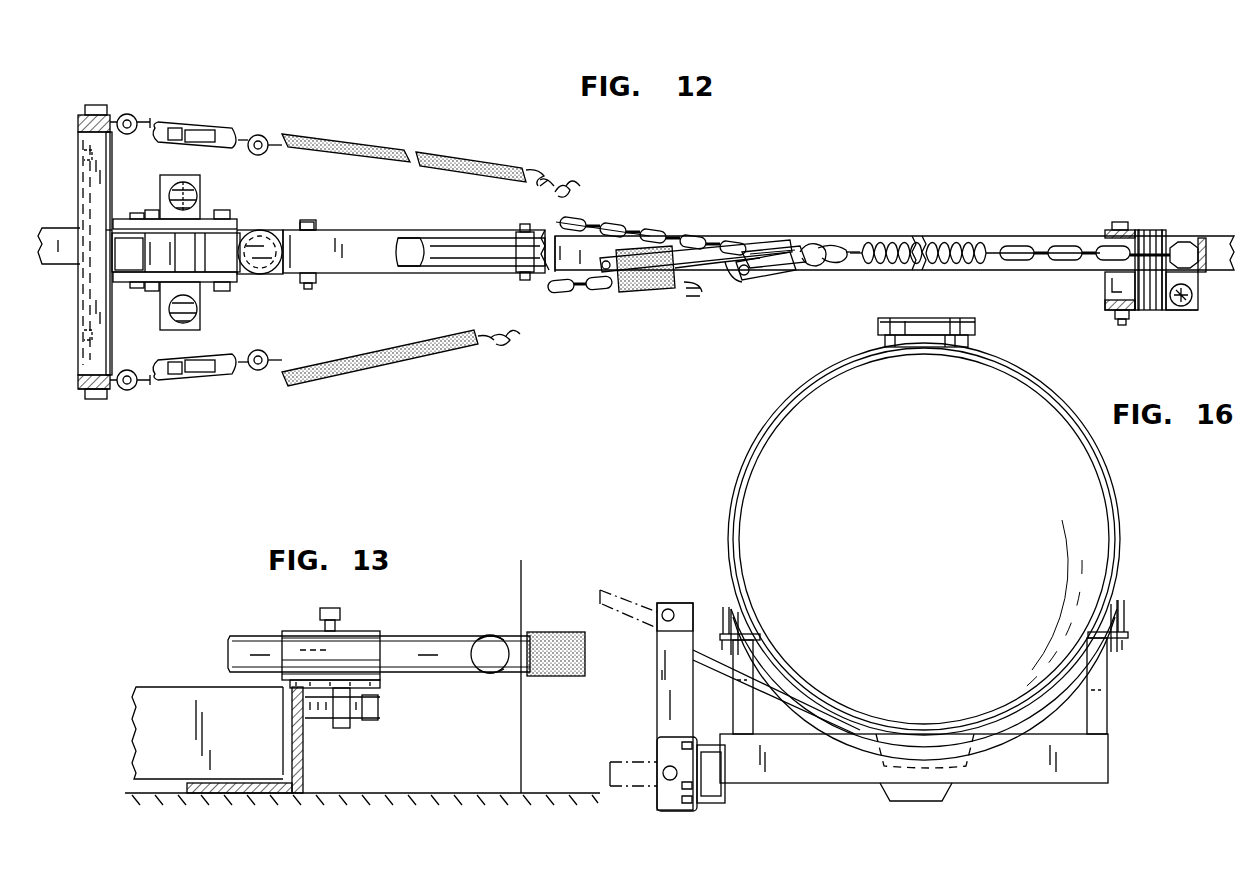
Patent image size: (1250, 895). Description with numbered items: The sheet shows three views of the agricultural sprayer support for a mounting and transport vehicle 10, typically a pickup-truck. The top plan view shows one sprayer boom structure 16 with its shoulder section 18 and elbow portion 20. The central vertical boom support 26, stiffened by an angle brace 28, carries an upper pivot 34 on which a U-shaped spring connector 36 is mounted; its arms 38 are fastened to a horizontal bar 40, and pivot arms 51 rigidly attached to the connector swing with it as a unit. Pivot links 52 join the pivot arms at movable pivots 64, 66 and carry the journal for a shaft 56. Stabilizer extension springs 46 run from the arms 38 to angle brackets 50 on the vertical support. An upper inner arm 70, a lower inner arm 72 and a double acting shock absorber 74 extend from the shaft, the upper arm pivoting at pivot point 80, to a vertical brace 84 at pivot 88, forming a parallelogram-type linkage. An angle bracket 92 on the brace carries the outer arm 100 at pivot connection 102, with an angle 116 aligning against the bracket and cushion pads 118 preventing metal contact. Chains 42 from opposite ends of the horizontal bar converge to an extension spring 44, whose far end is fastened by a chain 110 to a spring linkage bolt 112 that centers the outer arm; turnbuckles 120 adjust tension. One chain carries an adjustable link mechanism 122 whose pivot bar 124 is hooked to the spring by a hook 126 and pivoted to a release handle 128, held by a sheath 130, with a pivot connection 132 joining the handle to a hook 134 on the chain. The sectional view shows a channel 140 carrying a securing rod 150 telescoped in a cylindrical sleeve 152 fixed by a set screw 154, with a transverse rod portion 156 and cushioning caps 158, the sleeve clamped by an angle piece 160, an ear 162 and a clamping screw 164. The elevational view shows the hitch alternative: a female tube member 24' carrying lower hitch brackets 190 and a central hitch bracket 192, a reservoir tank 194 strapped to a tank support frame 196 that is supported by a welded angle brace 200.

In FIG. 13, the mounting and transport vehicle 10 is at (518, 572).
In FIG. 12, the sprayer boom structure 16 is at (936, 205).
In FIG. 12, the shoulder section 18 is at (76, 345).
In FIG. 12, the elbow portion 20 is at (1184, 320).
In FIG. 16, the female tube member 24' is at (714, 796).
In FIG. 12, the central vertical boom support 26 is at (180, 253).
In FIG. 12, the angle brace 28 is at (66, 255).
In FIG. 12, the upper pivot 34 is at (148, 218).
In FIG. 12, the U-shaped spring connector 36 is at (86, 324).
In FIG. 12, the arms 38 is at (120, 212).
In FIG. 12, the horizontal bar 40 is at (80, 187).
In FIG. 12, the chains 42 is at (530, 204).
In FIG. 12, the extension spring 44 is at (950, 240).
In FIG. 12, the stabilizer extension springs 46 is at (195, 190).
In FIG. 12, the angle brackets 50 is at (170, 182).
In FIG. 12, the pivot arms 51 is at (129, 253).
In FIG. 12, the pivot links 52 is at (226, 232).
In FIG. 12, the shaft 56 is at (268, 268).
In FIG. 12, the pivot 64 is at (150, 292).
In FIG. 12, the pivot 66 is at (240, 222).
In FIG. 12, the upper inner arm 70 is at (376, 246).
In FIG. 12, the lower inner arm 72 is at (852, 236).
In FIG. 12, the double acting shock absorber 74 is at (440, 246).
In FIG. 12, the pivot point 80 is at (312, 224).
In FIG. 12, the vertical brace 84 is at (1114, 222).
In FIG. 12, the pivot 88 is at (1118, 324).
In FIG. 12, the angle bracket 92 is at (1140, 312).
In FIG. 12, the outer arm 100 is at (1218, 236).
In FIG. 12, the pivot connection 102 is at (1226, 300).
In FIG. 12, the chain 110 is at (1062, 244).
In FIG. 12, the spring linkage bolt 112 is at (1184, 244).
In FIG. 12, the angle 116 is at (1162, 312).
In FIG. 12, the cushion pads 118 is at (1148, 230).
In FIG. 12, the turnbuckles 120 is at (222, 130).
In FIG. 12, the adjustable link mechanism 122 is at (642, 318).
In FIG. 12, the pivot bar 124 is at (782, 272).
In FIG. 12, the hook 126 is at (834, 268).
In FIG. 12, the release handle 128 is at (708, 246).
In FIG. 12, the sheath 130 is at (626, 294).
In FIG. 12, the pivot connection 132 is at (780, 246).
In FIG. 12, the hook 134 is at (698, 298).
In FIG. 13, the channel 140 is at (294, 794).
In FIG. 13, the securing rod 150 is at (430, 636).
In FIG. 13, the cylindrical sleeve 152 is at (286, 630).
In FIG. 13, the set screw 154 is at (340, 610).
In FIG. 13, the rod portion 156 is at (484, 676).
In FIG. 13, the cushioning caps 158 is at (530, 636).
In FIG. 13, the angle piece 160 is at (380, 688).
In FIG. 13, the ear 162 is at (350, 730).
In FIG. 13, the clamping screw 164 is at (374, 720).
In FIG. 16, the lower hitch brackets 190 is at (660, 808).
In FIG. 16, the central hitch bracket 192 is at (660, 666).
In FIG. 16, the reservoir tank 194 is at (758, 490).
In FIG. 16, the tank support frame 196 is at (806, 770).
In FIG. 16, the angle brace 200 is at (800, 700).